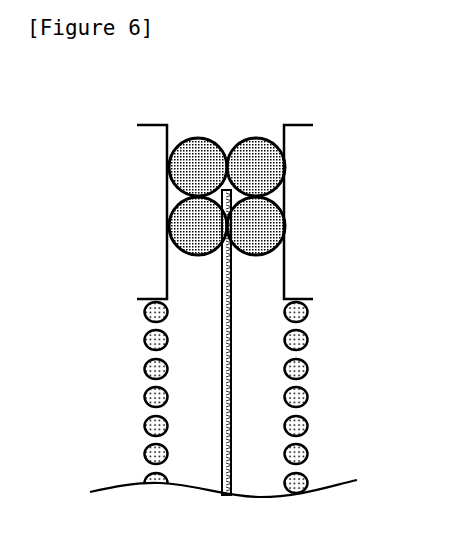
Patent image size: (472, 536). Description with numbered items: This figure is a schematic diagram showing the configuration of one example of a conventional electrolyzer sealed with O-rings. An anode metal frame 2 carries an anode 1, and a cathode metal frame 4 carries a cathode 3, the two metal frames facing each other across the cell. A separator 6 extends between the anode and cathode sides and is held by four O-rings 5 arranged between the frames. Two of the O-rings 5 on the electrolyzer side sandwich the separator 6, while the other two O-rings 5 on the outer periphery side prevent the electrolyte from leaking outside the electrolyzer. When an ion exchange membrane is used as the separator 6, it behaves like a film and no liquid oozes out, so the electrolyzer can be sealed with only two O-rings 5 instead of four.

The anode 1 is at (145, 397).
The anode metal frame 2 is at (147, 215).
The cathode 3 is at (305, 360).
The cathode metal frame 4 is at (308, 208).
The O-ring 5 is at (263, 140).
The separator 6 is at (229, 400).